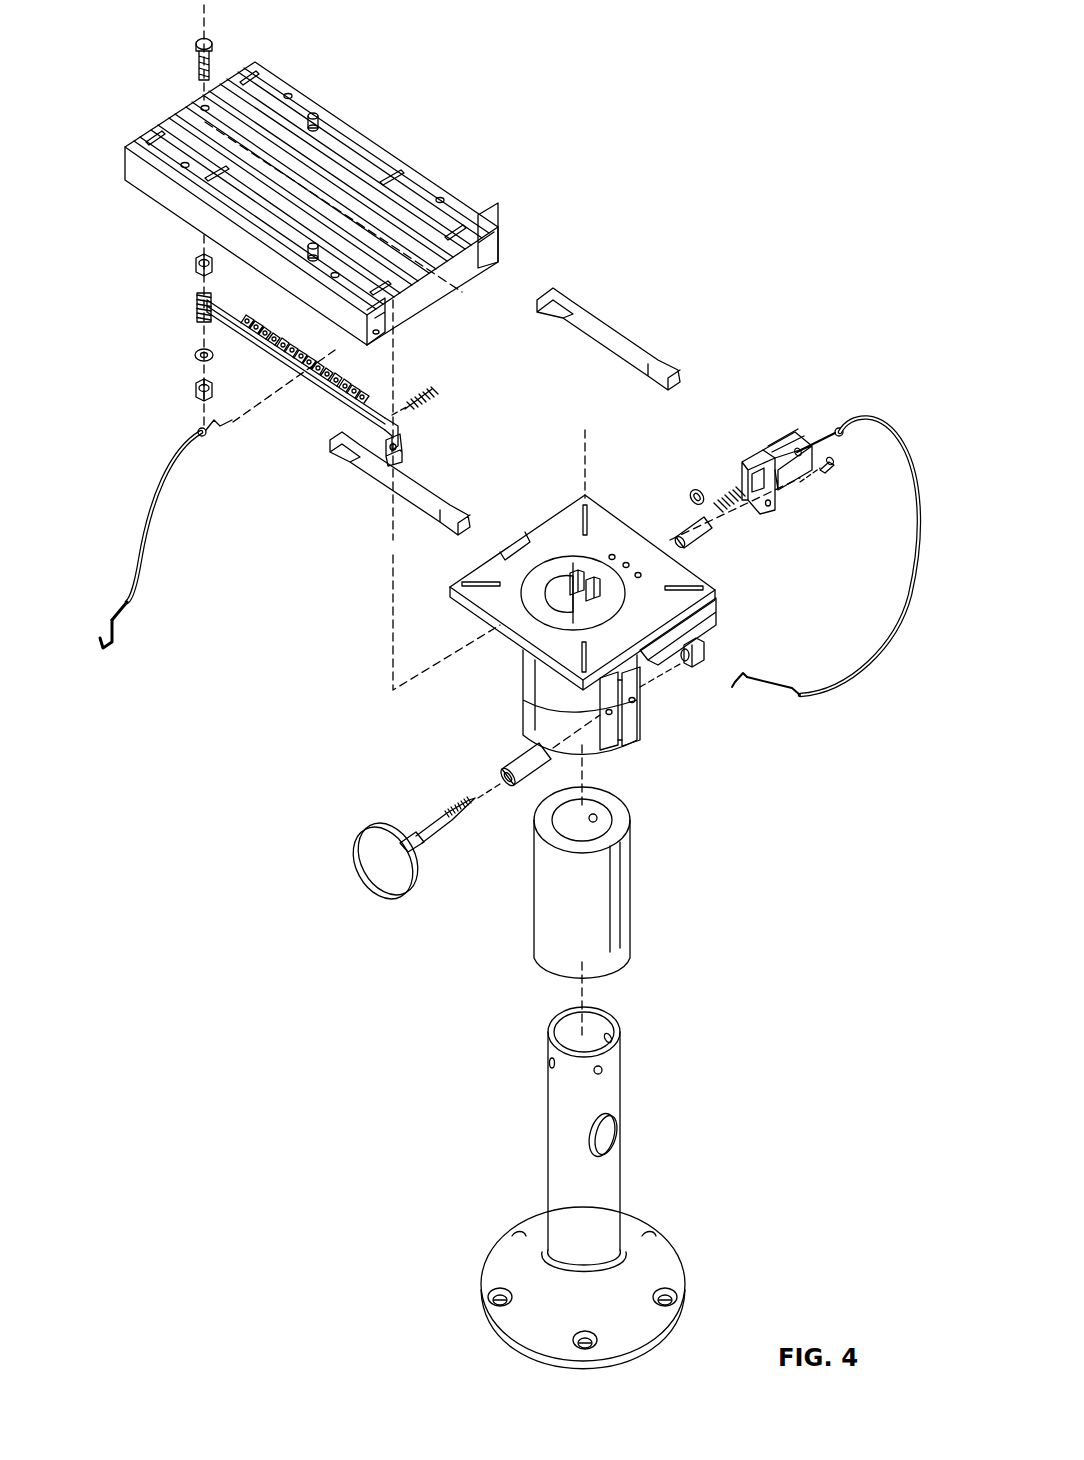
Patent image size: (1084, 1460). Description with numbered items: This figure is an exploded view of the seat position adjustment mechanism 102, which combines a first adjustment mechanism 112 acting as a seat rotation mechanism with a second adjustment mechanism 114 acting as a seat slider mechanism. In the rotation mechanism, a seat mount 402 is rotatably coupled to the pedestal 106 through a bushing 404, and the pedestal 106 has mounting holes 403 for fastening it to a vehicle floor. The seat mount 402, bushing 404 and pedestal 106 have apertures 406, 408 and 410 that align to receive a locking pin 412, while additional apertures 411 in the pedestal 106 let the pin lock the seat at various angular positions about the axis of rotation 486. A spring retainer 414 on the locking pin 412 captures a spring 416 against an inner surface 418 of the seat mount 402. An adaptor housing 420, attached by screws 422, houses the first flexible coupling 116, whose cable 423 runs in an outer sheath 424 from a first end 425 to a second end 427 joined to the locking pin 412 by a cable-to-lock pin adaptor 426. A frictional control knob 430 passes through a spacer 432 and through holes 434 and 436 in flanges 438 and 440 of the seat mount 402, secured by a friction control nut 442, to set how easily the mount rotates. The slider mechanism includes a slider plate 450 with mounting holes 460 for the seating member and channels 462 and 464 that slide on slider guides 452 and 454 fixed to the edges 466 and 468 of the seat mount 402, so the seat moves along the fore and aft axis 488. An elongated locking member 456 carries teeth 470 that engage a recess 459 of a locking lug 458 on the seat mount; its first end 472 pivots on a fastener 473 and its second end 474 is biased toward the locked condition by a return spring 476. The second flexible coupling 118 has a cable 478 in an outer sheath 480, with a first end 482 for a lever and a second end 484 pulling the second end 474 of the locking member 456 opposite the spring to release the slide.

The seat position adjustment mechanism 102 is at (766, 95).
The pedestal 106 is at (622, 1156).
The first adjustment mechanism 112 is at (755, 373).
The second adjustment mechanism 114 is at (481, 99).
The first flexible coupling 116 is at (831, 541).
The second flexible coupling 118 is at (176, 543).
The seat mount 402 is at (590, 558).
The mounting holes 403 is at (668, 1292).
The bushing 404 is at (534, 895).
The aperture 406 is at (690, 602).
The aperture 408 is at (597, 822).
The aperture 410 is at (612, 1032).
The apertures 411 is at (548, 1062).
The locking pin 412 is at (700, 536).
The spring retainer 414 is at (695, 488).
The spring 416 is at (742, 512).
The inner surface 418 is at (583, 568).
The adaptor housing 420 is at (770, 458).
The screws 422 is at (830, 475).
The cable 423 is at (795, 690).
The outer sheath 424 is at (912, 528).
The first end 425 is at (735, 680).
The cable-to-lock pin adaptor 426 is at (837, 427).
The second end 427 is at (825, 446).
The frictional control knob 430 is at (350, 848).
The spacer 432 is at (512, 768).
The hole 434 is at (540, 690).
The hole 436 is at (612, 718).
The flange 438 is at (628, 742).
The flange 440 is at (642, 730).
The friction control nut 442 is at (690, 668).
The slider plate 450 is at (362, 128).
The slider guide 452 is at (428, 500).
The slider guide 454 is at (612, 322).
The locking member 456 is at (338, 400).
The locking lug 458 is at (572, 575).
The recess 459 is at (584, 580).
The mounting holes 460 is at (250, 76).
The channel 462 is at (382, 330).
The channel 464 is at (497, 254).
The edge 466 is at (500, 606).
The edge 468 is at (630, 548).
The teeth 470 is at (228, 306).
The first end 472 is at (194, 296).
The fastener 473 is at (192, 52).
The second end 474 is at (402, 442).
The return spring 476 is at (437, 396).
The cable 478 is at (128, 610).
The outer sheath 480 is at (158, 492).
The first end 482 is at (115, 636).
The second end 484 is at (212, 433).
The axis of rotation 486 is at (580, 1000).
The fore and aft axis 488 is at (184, 100).